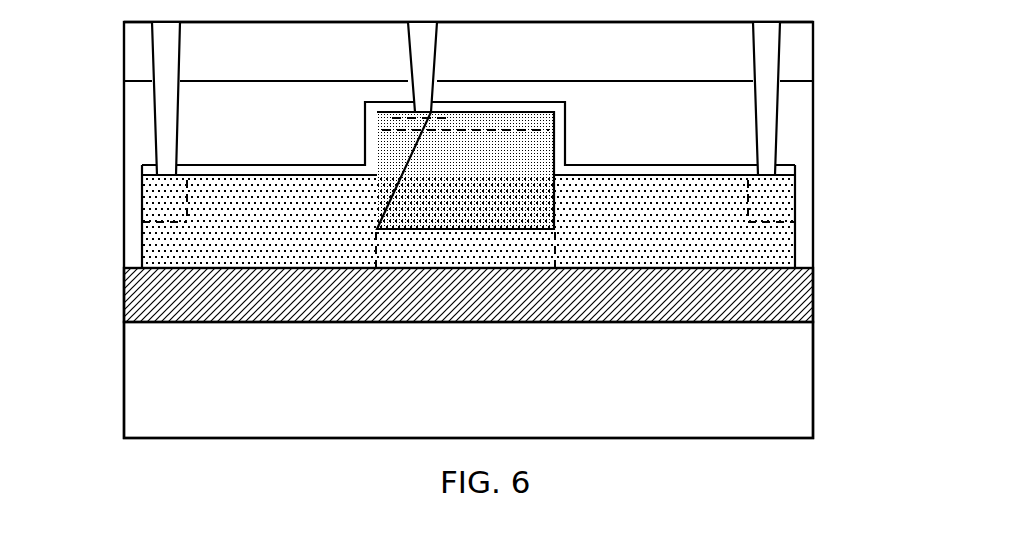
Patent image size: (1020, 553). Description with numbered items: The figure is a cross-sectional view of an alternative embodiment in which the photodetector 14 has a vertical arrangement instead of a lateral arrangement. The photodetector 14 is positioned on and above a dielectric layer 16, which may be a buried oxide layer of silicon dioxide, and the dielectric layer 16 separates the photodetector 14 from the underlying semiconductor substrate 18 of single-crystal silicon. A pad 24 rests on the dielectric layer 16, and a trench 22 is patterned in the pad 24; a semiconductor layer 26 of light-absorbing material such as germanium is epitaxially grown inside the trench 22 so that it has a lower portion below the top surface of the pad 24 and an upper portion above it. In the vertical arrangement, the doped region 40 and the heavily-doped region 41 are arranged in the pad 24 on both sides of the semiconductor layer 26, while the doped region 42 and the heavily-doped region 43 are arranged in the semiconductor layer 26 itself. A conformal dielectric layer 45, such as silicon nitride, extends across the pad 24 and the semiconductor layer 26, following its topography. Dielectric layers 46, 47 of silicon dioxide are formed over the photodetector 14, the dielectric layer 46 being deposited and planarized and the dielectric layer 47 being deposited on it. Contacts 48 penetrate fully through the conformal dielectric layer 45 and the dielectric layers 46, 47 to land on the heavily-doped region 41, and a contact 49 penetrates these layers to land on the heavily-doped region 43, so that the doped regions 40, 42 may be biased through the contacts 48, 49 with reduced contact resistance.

The photodetector 14 is at (116, 130).
The dielectric layer 16 is at (762, 302).
The semiconductor substrate 18 is at (762, 370).
The trench 22 is at (477, 230).
The pad 24 is at (438, 247).
The semiconductor layer 26 is at (513, 158).
The doped region 40 is at (212, 250).
The heavily-doped region 41 is at (157, 188).
The doped region 42 is at (493, 125).
The heavily-doped region 43 is at (402, 117).
The conformal dielectric layer 45 is at (232, 172).
The dielectric layer 46 is at (717, 137).
The dielectric layer 47 is at (707, 50).
The contacts 48 is at (167, 52).
The contacts 49 is at (418, 52).